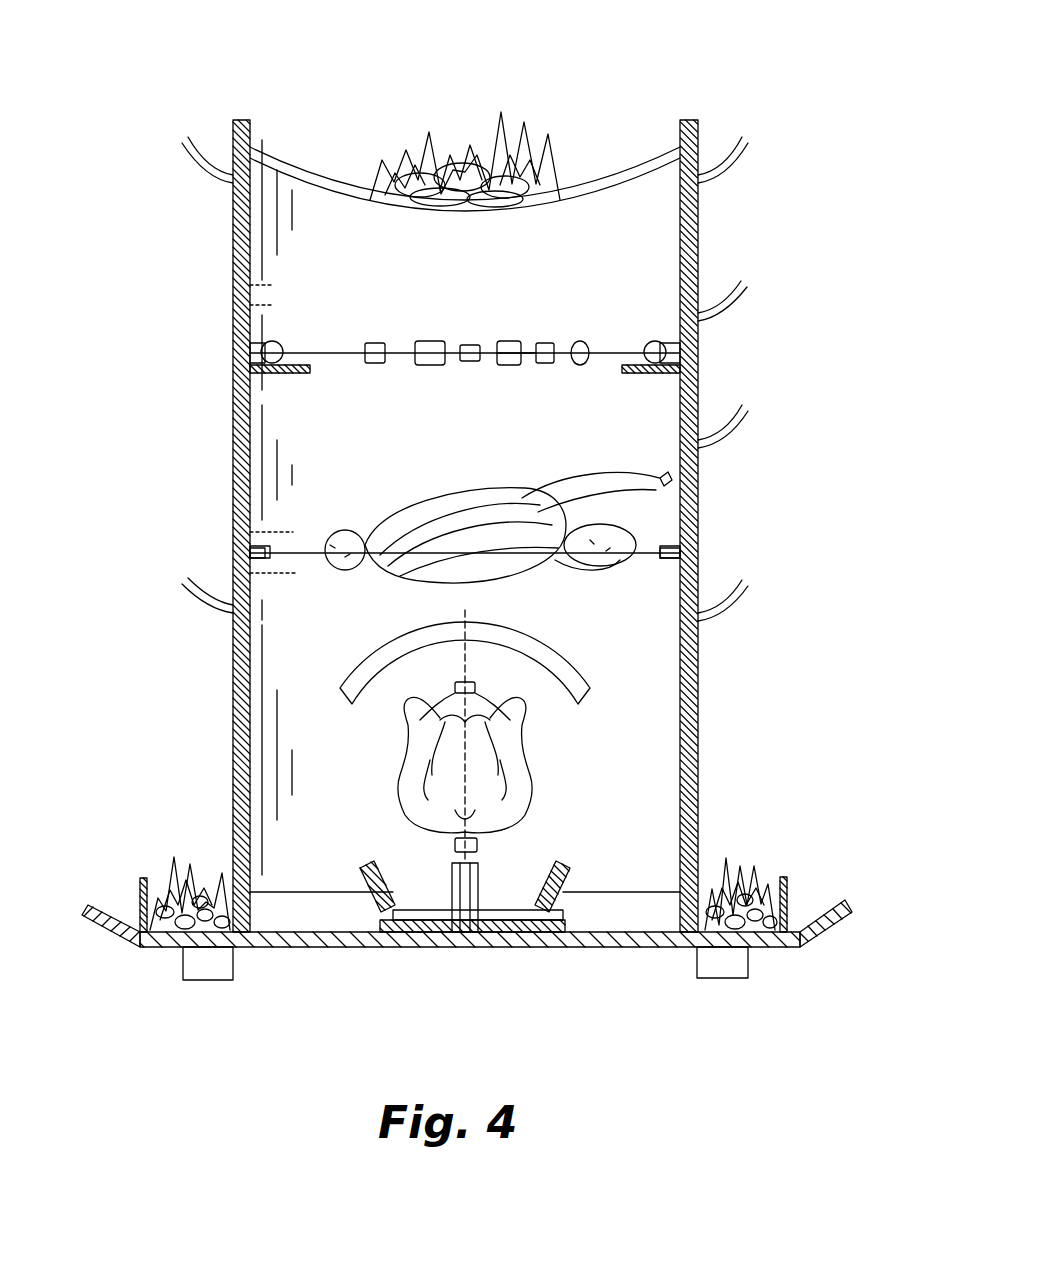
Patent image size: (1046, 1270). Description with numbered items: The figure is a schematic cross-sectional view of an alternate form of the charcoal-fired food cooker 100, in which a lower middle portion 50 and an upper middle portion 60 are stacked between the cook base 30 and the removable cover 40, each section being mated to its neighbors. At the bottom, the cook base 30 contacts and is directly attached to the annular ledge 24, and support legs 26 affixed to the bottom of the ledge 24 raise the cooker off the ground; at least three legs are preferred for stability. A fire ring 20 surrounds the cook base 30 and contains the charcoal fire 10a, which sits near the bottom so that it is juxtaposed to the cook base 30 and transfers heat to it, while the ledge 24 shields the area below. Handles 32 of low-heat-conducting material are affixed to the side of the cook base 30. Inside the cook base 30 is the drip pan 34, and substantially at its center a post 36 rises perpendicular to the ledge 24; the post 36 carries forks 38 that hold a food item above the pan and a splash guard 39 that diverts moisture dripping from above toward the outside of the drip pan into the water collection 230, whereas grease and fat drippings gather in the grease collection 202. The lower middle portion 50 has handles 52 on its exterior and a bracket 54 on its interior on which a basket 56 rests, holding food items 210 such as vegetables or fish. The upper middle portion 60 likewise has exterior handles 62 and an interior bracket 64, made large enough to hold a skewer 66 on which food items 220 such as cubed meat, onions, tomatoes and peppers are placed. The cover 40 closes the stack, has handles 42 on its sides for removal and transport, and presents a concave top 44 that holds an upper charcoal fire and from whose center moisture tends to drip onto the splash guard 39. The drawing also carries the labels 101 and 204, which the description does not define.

The food cooker 100 is at (644, 58).
The fire on lid 101 is at (480, 120).
The concave top 44 is at (580, 190).
The handles 42 is at (742, 137).
The cover 40 is at (698, 237).
The handles 62 is at (742, 283).
The upper middle portion 60 is at (698, 378).
The bracket 64 is at (272, 340).
The skewer 66 is at (525, 343).
The food items 220 is at (388, 343).
The handles 52 is at (743, 408).
The lower middle portion 50 is at (698, 530).
The basket 56 is at (293, 548).
The bracket 54 is at (262, 560).
The food items 210 is at (485, 498).
The splash guard 39 is at (520, 632).
The fork 38 is at (420, 690).
The post 36 is at (445, 910).
The drip pan 34 is at (565, 890).
The grease collection 202 is at (490, 905).
The water collection 230 is at (580, 920).
The handles 32 is at (743, 583).
The cook base 30 is at (698, 722).
The charcoal fire 10a is at (758, 862).
The fire ring 20 is at (787, 895).
The annular ledge 24 is at (810, 935).
The support legs 26 is at (217, 962).
The hanging poultry 204 is at (465, 763).